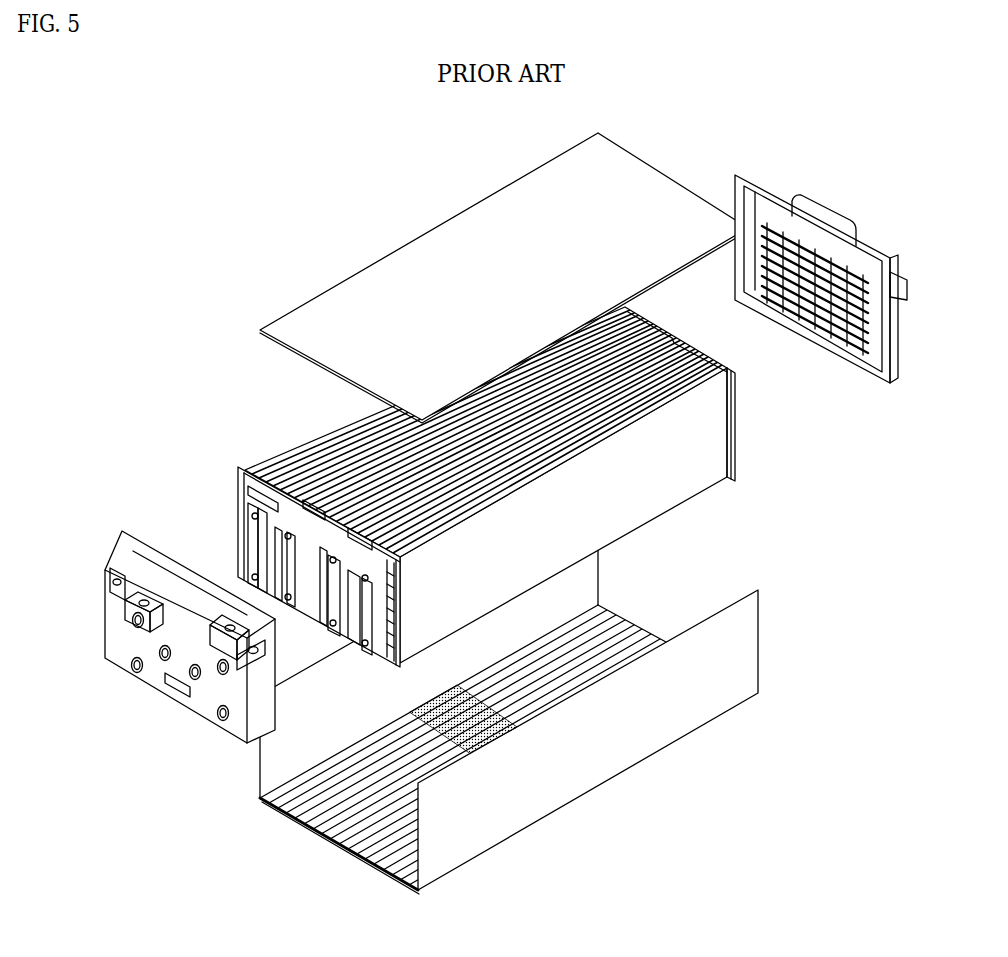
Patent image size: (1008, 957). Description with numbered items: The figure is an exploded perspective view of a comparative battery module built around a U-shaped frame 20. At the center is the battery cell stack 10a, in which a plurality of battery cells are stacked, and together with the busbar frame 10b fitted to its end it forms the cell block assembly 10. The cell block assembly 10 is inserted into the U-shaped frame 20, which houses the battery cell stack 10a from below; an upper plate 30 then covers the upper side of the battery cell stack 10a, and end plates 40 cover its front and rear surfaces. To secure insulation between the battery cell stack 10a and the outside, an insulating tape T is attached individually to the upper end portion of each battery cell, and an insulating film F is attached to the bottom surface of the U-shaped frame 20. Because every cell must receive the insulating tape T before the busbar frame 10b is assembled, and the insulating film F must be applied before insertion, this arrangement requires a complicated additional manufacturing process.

The cell block assembly 10 is at (439, 487).
The battery cell stack 10a is at (271, 436).
The busbar frame 10b is at (238, 490).
The U-shaped frame 20 is at (509, 698).
The upper plate 30 is at (442, 258).
The end plate 40 is at (763, 183).
The insulating tape T is at (582, 420).
The insulating film F is at (477, 730).